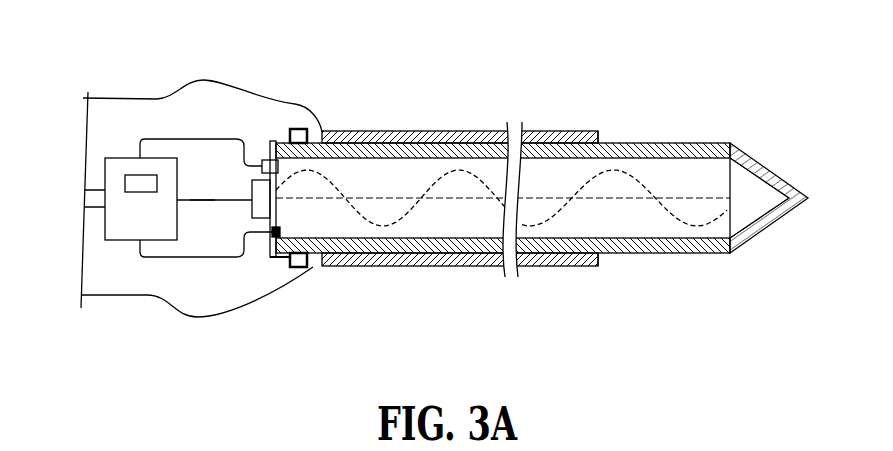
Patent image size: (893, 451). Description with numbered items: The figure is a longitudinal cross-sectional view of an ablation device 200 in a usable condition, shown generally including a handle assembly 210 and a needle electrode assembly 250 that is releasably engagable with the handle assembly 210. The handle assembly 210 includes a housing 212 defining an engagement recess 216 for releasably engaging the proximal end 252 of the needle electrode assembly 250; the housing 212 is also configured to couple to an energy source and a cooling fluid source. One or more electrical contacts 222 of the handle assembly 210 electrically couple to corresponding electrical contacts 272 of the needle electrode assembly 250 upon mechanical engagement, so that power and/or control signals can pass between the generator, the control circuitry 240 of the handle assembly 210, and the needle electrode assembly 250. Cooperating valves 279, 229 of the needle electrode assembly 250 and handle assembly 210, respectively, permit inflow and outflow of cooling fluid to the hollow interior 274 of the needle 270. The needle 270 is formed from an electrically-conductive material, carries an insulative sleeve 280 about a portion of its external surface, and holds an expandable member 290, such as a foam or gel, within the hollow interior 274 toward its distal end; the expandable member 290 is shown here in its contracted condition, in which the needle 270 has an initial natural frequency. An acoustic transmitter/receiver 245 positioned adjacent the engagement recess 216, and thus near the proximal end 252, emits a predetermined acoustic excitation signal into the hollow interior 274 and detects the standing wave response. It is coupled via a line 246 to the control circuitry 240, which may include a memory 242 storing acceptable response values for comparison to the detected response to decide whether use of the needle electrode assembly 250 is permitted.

The ablation device 200 is at (636, 62).
The handle assembly 210 is at (110, 98).
The housing 212 is at (207, 80).
The engagement recess 216 is at (288, 132).
The electrical contacts 222 is at (271, 140).
The valve 229 is at (270, 237).
The control circuitry 240 is at (117, 215).
The memory 242 is at (128, 174).
The acoustic transmitter/receiver 245 is at (263, 219).
The line 246 is at (203, 200).
The needle electrode assembly 250 is at (475, 124).
The proximal end 252 is at (313, 268).
The needle 270 is at (690, 255).
The electrical contacts 272 is at (323, 134).
The hollow interior 274 is at (672, 168).
The valve 279 is at (277, 254).
The insulative sleeve 280 is at (574, 132).
The expandable member 290 is at (760, 195).